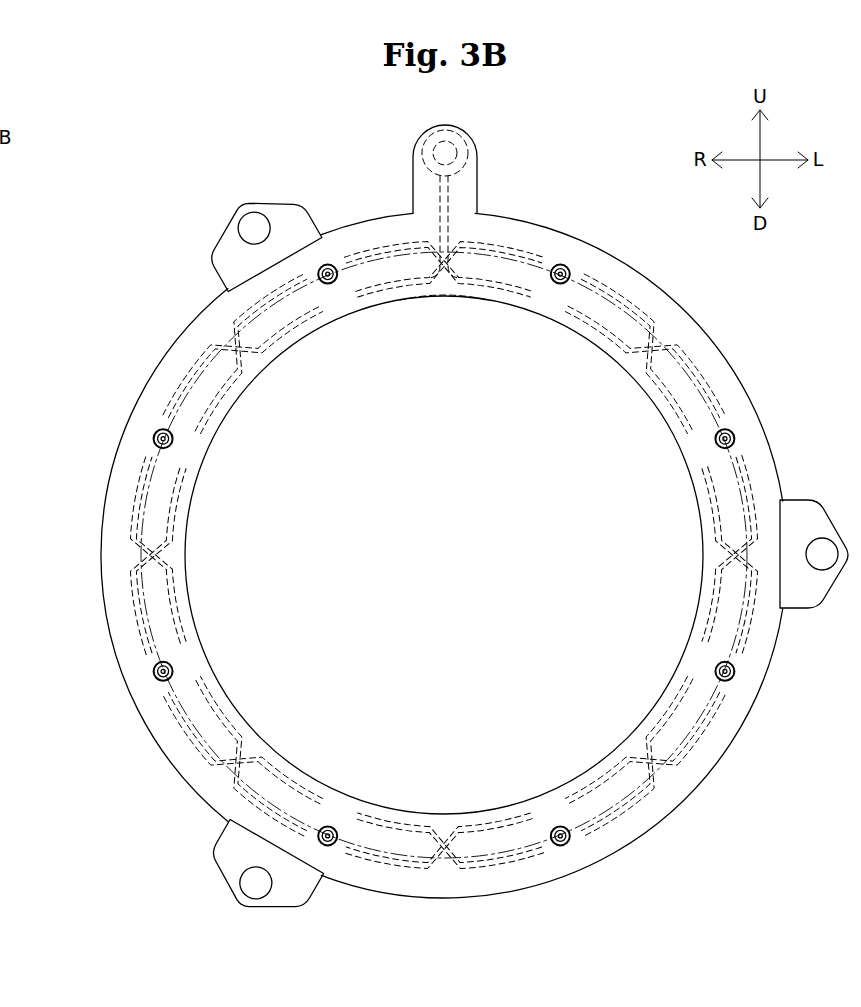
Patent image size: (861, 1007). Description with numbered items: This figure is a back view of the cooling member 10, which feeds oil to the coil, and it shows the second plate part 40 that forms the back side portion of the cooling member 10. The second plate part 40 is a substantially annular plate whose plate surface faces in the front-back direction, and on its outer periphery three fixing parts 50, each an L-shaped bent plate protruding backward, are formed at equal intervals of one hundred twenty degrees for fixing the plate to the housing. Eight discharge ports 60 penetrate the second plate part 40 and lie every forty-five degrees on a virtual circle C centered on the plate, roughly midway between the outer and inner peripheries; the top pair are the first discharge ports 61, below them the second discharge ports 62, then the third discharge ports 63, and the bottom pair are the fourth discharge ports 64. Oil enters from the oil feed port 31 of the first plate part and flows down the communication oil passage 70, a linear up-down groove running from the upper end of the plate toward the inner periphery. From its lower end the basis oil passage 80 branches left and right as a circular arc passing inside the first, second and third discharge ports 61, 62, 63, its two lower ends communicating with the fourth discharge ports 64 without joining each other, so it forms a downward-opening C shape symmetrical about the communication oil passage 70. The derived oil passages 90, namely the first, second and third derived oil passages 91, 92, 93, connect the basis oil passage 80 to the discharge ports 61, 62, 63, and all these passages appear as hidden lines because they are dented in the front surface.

The cooling member 10 is at (427, 536).
The oil feed port 31 is at (478, 150).
The second plate part 40 is at (547, 233).
The fixing parts 50 is at (224, 236).
The discharge ports 60 is at (444, 555).
The first discharge ports 61 is at (338, 284).
The second discharge ports 62 is at (174, 444).
The third discharge ports 63 is at (174, 665).
The fourth discharge ports 64 is at (336, 826).
The communication oil passage 70 is at (432, 208).
The basis oil passage 80 is at (407, 307).
The derived oil passages 90 is at (427, 555).
The first derived oil passages 91 is at (168, 348).
The second derived oil passages 92 is at (746, 452).
The third derived oil passages 93 is at (160, 697).
The virtual circle C is at (445, 860).